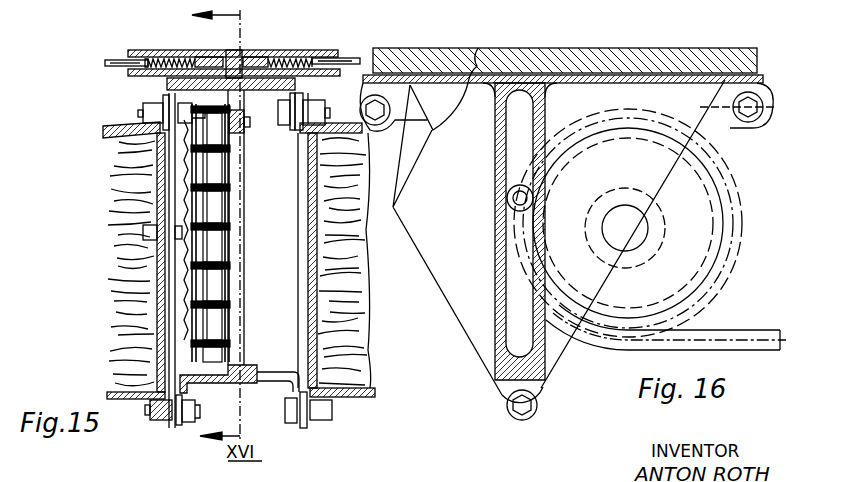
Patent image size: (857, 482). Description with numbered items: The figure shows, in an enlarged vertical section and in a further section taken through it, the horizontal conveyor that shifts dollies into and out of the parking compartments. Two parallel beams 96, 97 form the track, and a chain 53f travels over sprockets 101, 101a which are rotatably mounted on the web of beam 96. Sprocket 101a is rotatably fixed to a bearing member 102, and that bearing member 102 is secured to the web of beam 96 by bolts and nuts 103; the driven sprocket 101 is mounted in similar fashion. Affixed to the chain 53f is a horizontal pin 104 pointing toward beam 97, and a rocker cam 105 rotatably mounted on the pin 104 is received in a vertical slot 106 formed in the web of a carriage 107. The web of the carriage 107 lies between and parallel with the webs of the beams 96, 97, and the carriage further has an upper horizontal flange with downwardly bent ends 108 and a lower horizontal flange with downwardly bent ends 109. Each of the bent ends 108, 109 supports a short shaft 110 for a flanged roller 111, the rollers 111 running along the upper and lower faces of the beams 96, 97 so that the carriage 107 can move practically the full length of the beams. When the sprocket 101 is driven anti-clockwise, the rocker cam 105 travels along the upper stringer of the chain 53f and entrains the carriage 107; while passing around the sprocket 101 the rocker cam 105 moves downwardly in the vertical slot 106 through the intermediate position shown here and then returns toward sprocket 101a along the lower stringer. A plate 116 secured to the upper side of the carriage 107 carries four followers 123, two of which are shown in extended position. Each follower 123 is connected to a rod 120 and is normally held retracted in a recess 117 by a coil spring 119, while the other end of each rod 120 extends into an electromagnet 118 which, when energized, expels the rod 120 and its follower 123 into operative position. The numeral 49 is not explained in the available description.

In FIG. 15, the plate 116 is at (236, 58).
In FIG. 16, the plate 116 is at (560, 64).
In FIG. 15, the follower 123 is at (115, 62).
In FIG. 15, the coil spring 119 is at (152, 60).
In FIG. 15, the rod 120 is at (172, 60).
In FIG. 15, the electromagnet 118 is at (208, 57).
In FIG. 15, the recess 117 is at (288, 59).
In FIG. 15, the pin 49 is at (324, 44).
In FIG. 15, the downwardly bent ends of upper flange 108 is at (296, 89).
In FIG. 16, the downwardly bent ends of upper flange 108 is at (390, 120).
In FIG. 15, the flanged roller 111 is at (155, 110).
In FIG. 15, the horizontal pin 104 is at (240, 118).
In FIG. 16, the horizontal pin 104 is at (515, 208).
In FIG. 15, the rocker cam 105 is at (244, 140).
In FIG. 16, the rocker cam 105 is at (512, 190).
In FIG. 15, the bearing member 102 is at (175, 210).
In FIG. 15, the bolts and nuts 103 is at (145, 233).
In FIG. 15, the beam 96 is at (157, 292).
In FIG. 15, the beam 97 is at (308, 272).
In FIG. 15, the chain 53f is at (192, 345).
In FIG. 16, the chain 53f is at (742, 332).
In FIG. 15, the sprocket 101a is at (222, 310).
In FIG. 15, the vertical slot 106 is at (244, 340).
In FIG. 16, the vertical slot 106 is at (520, 337).
In FIG. 15, the carriage 107 is at (232, 385).
In FIG. 16, the carriage 107 is at (505, 400).
In FIG. 15, the short shaft 110 is at (152, 422).
In FIG. 15, the downwardly bent ends of lower flange 109 is at (186, 425).
In FIG. 16, the downwardly bent ends of lower flange 109 is at (540, 410).
In FIG. 16, the driven sprocket 101 is at (700, 242).